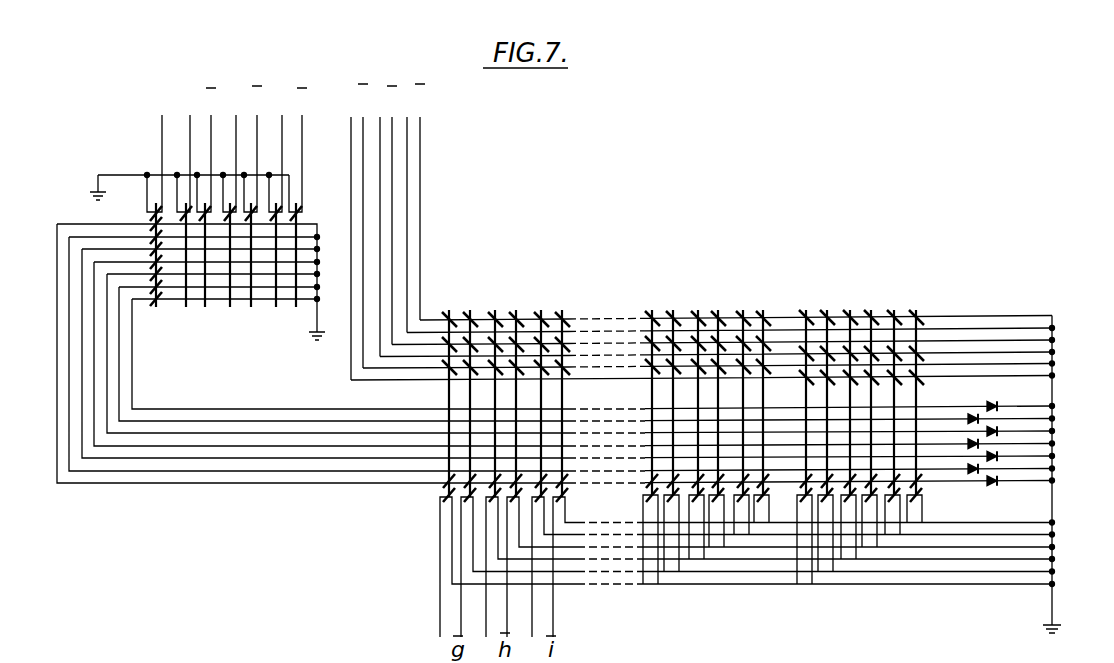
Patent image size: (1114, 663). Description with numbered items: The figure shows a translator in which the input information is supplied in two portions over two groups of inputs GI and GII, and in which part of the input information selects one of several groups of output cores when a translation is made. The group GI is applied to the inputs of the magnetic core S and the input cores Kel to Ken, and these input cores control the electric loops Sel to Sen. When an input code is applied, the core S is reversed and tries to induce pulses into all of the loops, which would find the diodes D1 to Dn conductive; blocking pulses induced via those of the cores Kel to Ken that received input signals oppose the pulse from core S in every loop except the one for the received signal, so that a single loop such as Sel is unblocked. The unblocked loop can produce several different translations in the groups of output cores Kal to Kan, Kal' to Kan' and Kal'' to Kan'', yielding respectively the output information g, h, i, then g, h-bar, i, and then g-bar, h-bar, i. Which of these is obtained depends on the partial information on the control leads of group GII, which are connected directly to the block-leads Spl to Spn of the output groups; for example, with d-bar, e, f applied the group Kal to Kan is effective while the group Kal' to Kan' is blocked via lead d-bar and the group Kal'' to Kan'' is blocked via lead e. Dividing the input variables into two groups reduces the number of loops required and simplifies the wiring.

The first group of inputs GI is at (317, 79).
The second group of inputs GII is at (430, 78).
The magnetic core S is at (154, 269).
The first input core Kel is at (191, 269).
The last input core Ken is at (250, 269).
The first output core of first output group Kal is at (506, 460).
The last output core of first output group Kan is at (519, 460).
The first output core of second output group Kal' is at (661, 431).
The last output core of second output group Kan' is at (724, 426).
The first output core of third output group Kal'' is at (820, 431).
The last output core of third output group Kan'' is at (882, 426).
The first block-lead Spl is at (621, 318).
The last block-lead Spn is at (569, 380).
The first electric loop Sel is at (632, 500).
The last electric loop Sen is at (554, 373).
The first diode D1 is at (996, 397).
The last diode Dn is at (994, 493).
The output information g is at (436, 649).
The output information h is at (484, 649).
The output information i is at (529, 649).